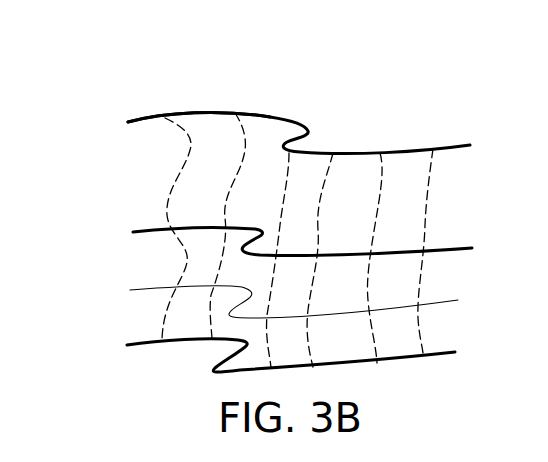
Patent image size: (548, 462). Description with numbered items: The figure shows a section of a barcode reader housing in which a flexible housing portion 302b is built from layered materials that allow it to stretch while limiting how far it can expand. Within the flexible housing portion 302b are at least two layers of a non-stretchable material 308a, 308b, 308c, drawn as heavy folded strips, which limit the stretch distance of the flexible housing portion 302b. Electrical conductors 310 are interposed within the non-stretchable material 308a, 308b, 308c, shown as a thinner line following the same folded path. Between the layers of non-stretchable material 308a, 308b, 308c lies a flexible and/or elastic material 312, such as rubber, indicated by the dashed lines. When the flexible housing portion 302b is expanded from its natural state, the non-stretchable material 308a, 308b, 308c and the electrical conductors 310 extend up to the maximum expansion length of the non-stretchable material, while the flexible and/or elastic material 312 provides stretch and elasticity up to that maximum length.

The flexible housing portion 302b is at (329, 95).
The non-stretchable material 308a is at (450, 145).
The non-stretchable material 308b is at (455, 248).
The non-stretchable material 308c is at (445, 353).
The electrical conductors 310 is at (148, 288).
The flexible and/or elastic material 312 is at (124, 165).